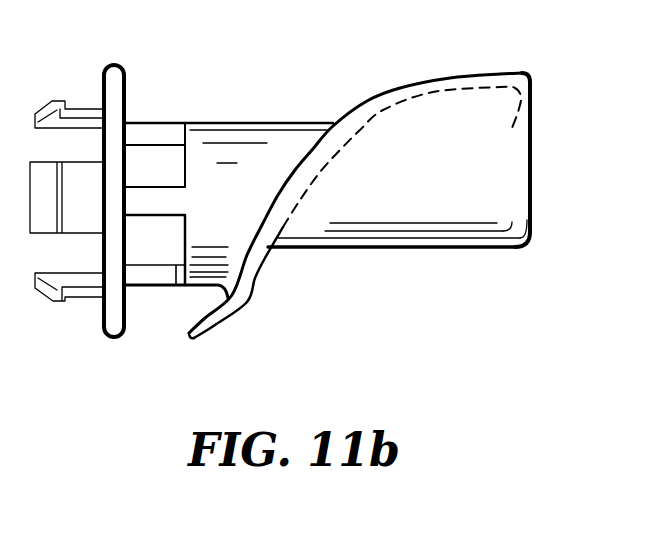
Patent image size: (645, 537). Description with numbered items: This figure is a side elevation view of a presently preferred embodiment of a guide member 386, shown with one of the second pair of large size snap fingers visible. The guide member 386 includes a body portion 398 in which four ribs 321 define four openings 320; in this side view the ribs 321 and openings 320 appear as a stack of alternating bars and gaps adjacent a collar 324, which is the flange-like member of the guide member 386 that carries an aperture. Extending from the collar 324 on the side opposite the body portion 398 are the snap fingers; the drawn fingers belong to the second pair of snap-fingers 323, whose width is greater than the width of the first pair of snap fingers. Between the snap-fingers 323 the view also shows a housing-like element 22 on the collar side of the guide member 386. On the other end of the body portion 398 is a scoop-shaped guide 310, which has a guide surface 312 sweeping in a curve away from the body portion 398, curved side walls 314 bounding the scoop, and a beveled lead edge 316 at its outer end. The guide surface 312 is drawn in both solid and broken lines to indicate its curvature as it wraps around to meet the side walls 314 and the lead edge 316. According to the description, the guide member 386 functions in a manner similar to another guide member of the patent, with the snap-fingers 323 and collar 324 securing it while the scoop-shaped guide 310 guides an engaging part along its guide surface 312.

The connector housing 22 is at (43, 222).
The scoop-shaped guide 310 is at (383, 208).
The guide surface 312 is at (349, 133).
The curved side walls 314 is at (482, 223).
The beveled lead edge 316 is at (503, 152).
The openings 320 is at (156, 171).
The ribs 321 is at (144, 137).
The second pair of snap-fingers 323 is at (47, 103).
The collar 324 is at (118, 328).
The guide member 386 is at (313, 90).
The body portion 398 is at (250, 148).